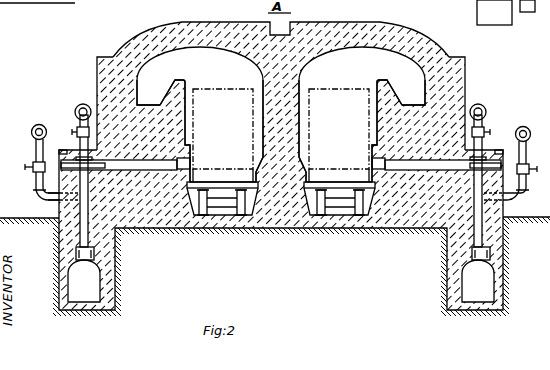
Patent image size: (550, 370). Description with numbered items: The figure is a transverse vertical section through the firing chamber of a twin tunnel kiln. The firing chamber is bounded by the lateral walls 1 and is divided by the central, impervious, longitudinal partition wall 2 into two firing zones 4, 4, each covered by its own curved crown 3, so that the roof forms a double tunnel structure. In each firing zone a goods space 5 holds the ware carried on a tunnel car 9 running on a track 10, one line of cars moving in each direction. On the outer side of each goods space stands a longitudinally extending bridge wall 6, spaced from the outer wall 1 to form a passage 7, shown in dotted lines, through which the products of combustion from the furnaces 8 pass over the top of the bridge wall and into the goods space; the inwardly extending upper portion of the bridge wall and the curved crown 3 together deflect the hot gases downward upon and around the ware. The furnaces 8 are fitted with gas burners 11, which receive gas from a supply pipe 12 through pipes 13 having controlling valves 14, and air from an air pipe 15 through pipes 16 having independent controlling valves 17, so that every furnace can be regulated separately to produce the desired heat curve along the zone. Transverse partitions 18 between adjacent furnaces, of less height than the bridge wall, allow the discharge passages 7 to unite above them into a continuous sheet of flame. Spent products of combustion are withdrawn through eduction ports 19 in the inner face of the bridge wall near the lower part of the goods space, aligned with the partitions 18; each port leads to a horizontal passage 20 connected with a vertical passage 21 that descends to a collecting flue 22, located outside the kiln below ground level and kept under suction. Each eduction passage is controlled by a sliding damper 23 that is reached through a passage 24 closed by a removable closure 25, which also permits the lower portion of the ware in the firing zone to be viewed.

The lateral wall 1 is at (103, 77).
The longitudinal partition wall 2 is at (281, 118).
The crown 3 is at (203, 26).
The firing zone 4 is at (281, 114).
The goods space 5 is at (280, 135).
The bridge wall 6 is at (178, 129).
The passage 7 is at (158, 103).
The furnace 8 is at (138, 232).
The tunnel car 9 is at (220, 184).
The track 10 is at (240, 216).
The gas burner 11 is at (125, 232).
The supply pipe 12 is at (80, 107).
The pipe 13 is at (80, 143).
The controlling valve 14 is at (77, 130).
The air pipe 15 is at (32, 131).
The pipe 16 is at (36, 143).
The independent controlling valve 17 is at (29, 171).
The transverse partition 18 is at (143, 103).
The eduction port 19 is at (284, 162).
The horizontal passage 20 is at (281, 163).
The vertical passage 21 is at (60, 206).
The collecting flue 22 is at (281, 281).
The sliding damper 23 is at (499, 133).
The passage 24 is at (66, 168).
The removable closure 25 is at (60, 152).